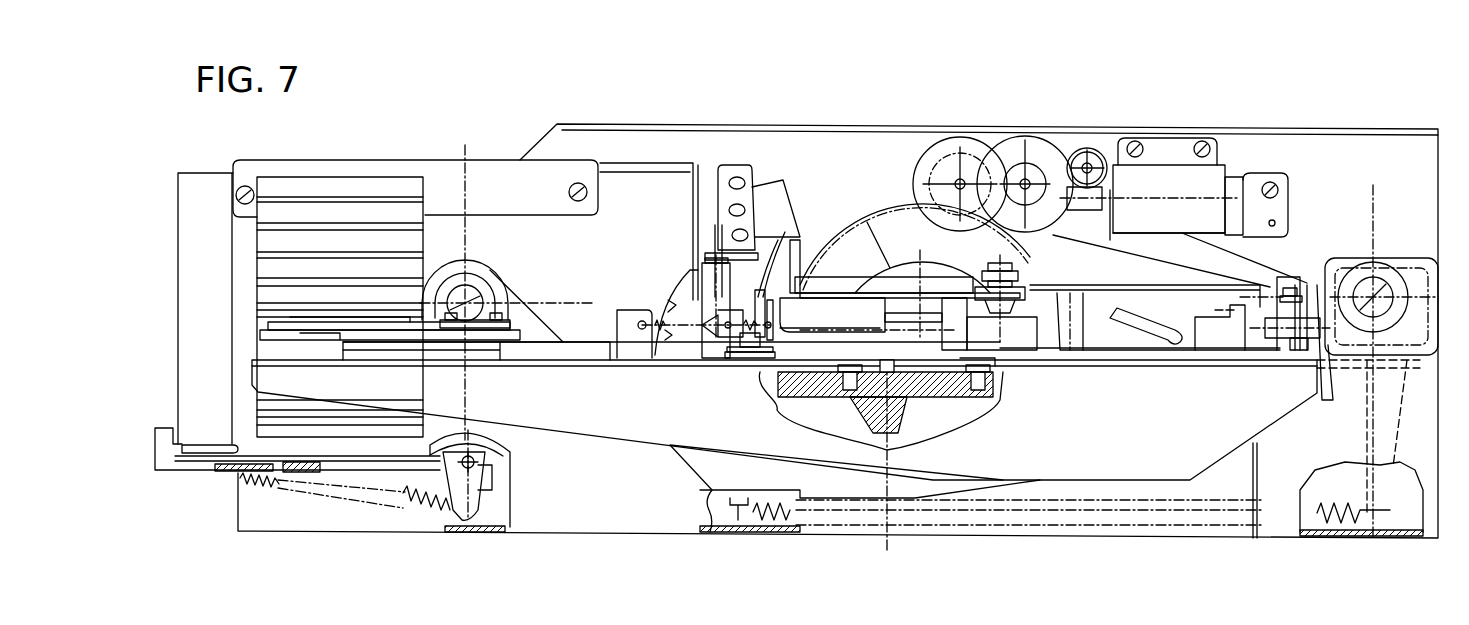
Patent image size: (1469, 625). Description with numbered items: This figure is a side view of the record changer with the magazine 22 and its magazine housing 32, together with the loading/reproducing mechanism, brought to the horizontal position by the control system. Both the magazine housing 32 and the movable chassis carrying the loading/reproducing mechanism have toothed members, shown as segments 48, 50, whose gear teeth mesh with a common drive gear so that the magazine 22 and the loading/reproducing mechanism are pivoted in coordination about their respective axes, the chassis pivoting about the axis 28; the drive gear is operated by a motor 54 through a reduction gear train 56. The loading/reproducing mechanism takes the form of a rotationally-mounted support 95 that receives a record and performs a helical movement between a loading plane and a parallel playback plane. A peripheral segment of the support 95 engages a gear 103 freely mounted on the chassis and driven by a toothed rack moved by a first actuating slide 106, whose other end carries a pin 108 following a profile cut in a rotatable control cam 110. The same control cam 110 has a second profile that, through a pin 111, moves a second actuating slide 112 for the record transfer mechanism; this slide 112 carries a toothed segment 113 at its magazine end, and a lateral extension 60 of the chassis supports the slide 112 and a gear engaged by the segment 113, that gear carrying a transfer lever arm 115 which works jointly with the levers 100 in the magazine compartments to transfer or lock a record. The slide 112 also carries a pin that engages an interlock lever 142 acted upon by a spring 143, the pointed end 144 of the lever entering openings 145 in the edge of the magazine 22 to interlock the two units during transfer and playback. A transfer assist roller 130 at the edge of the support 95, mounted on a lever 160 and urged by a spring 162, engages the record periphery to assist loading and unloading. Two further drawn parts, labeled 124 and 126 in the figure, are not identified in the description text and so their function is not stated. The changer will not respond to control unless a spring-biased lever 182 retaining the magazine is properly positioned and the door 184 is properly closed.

The magazine 22 is at (369, 142).
The axis 28 is at (1378, 282).
The magazine housing 32 is at (553, 272).
The toothed segment 48 is at (767, 235).
The toothed segment 50 is at (1117, 240).
The motor 54 is at (1180, 194).
The reduction gear train 56 is at (1037, 150).
The lateral extension 60 is at (380, 392).
The rotationally-mounted support 95 is at (1146, 320).
The levers 100 is at (275, 324).
The gear 103 is at (1290, 288).
The first actuating slide 106 is at (1160, 362).
The pin 108 is at (990, 380).
The control cam 110 is at (875, 430).
The pin 111 is at (848, 388).
The second actuating slide 112 is at (567, 362).
The toothed segment 113 is at (483, 362).
The transfer lever arm 115 is at (275, 334).
The drive shaft 124 is at (1090, 283).
The bearing stack 126 is at (985, 292).
The transfer assist roller 130 is at (815, 298).
The interlock lever 142 is at (795, 215).
The spring 143 is at (660, 356).
The pointed end 144 is at (730, 350).
The openings 145 is at (665, 328).
The lever 160 is at (857, 290).
The spring 162 is at (978, 390).
The spring-biased lever 182 is at (492, 500).
The door 184 is at (178, 418).